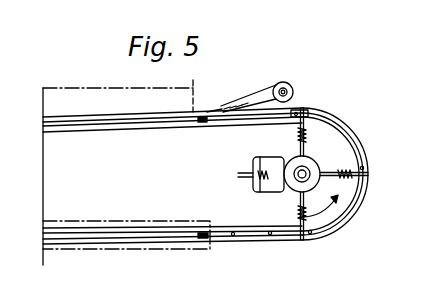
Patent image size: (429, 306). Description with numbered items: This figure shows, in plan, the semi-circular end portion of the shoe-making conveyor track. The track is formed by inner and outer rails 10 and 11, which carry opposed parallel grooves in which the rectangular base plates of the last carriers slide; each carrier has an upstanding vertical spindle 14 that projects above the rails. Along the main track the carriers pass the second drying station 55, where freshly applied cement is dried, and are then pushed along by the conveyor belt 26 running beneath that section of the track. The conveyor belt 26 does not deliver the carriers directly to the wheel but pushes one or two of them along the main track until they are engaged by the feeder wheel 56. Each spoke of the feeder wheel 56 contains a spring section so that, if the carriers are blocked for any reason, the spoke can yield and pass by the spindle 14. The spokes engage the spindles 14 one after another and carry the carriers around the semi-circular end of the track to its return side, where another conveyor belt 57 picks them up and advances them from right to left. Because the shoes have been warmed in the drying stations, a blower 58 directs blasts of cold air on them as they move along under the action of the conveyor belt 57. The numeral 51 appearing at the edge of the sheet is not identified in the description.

The inner rail 10 is at (118, 116).
The outer rail 11 is at (122, 133).
The spindle 14 is at (364, 166).
The conveyor belt 26 is at (191, 242).
The frame member 51 is at (412, 300).
The second drying station 55 is at (128, 253).
The feeder wheel 56 is at (323, 158).
The conveyor belt 57 is at (197, 128).
The blower 58 is at (293, 83).